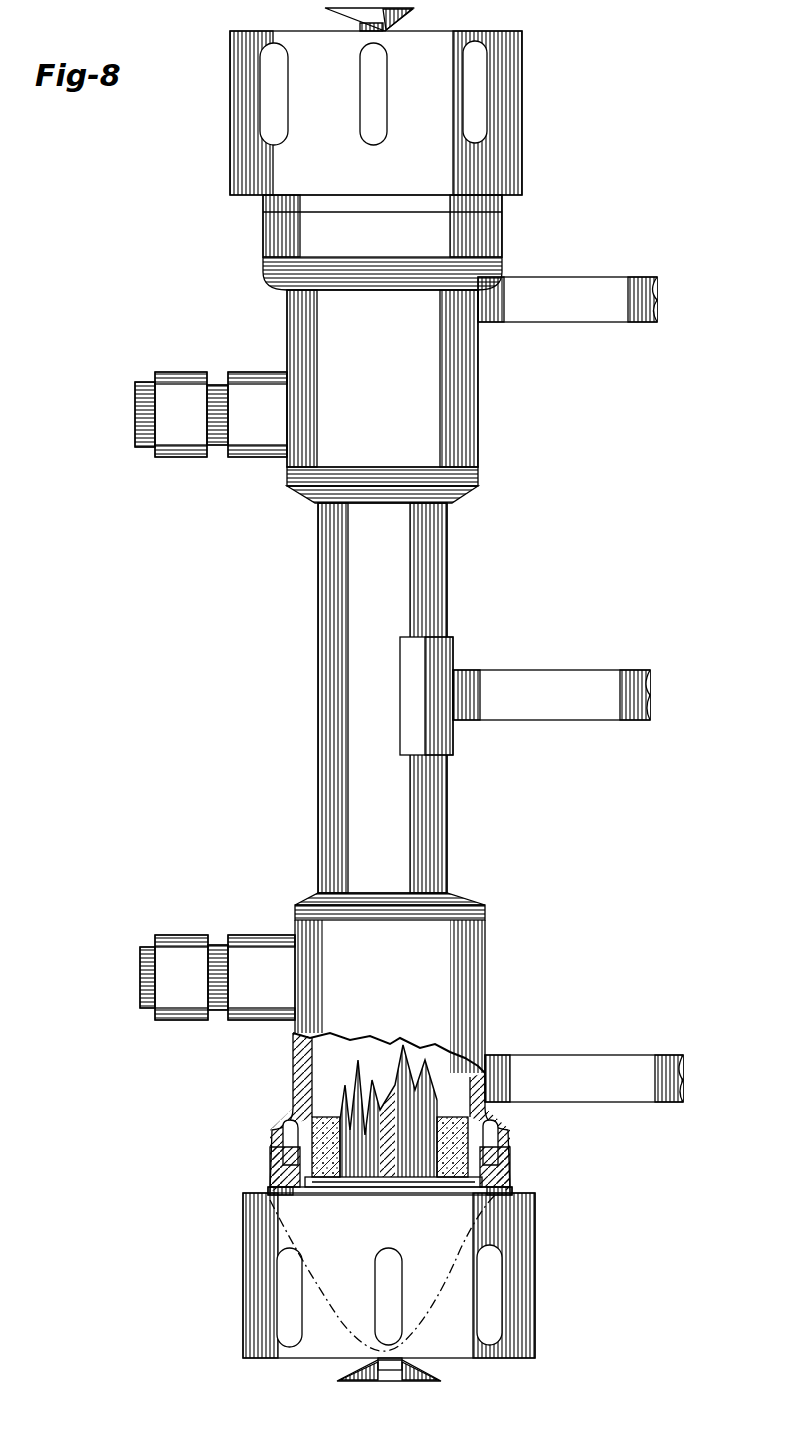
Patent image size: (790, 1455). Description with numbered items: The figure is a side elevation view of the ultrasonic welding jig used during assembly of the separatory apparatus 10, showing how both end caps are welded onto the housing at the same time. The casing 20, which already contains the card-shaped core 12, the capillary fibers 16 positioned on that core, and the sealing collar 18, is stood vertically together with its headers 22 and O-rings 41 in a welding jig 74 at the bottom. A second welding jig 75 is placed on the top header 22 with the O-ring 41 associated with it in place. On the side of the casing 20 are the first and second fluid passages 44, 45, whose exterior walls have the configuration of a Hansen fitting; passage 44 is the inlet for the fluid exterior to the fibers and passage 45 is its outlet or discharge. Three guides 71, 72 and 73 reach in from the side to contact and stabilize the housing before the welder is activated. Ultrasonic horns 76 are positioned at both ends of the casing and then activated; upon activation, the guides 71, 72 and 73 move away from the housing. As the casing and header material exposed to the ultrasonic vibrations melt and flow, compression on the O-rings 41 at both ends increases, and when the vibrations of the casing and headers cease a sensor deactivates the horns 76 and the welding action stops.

The separatory apparatus 10 is at (512, 588).
The core 12 is at (385, 1112).
The capillary fibers 16 is at (352, 1150).
The sealing collar 18 is at (352, 1163).
The casing 20 is at (318, 644).
The header 22 is at (266, 206).
The O-ring 41 is at (512, 1180).
The first fluid passage 44 is at (183, 945).
The second fluid passage 45 is at (180, 457).
The guide 71 is at (566, 292).
The guide 72 is at (550, 682).
The guide 73 is at (584, 1068).
The welding jig 74 is at (523, 1269).
The second welding jig 75 is at (522, 156).
The ultrasonic horn 76 is at (407, 13).